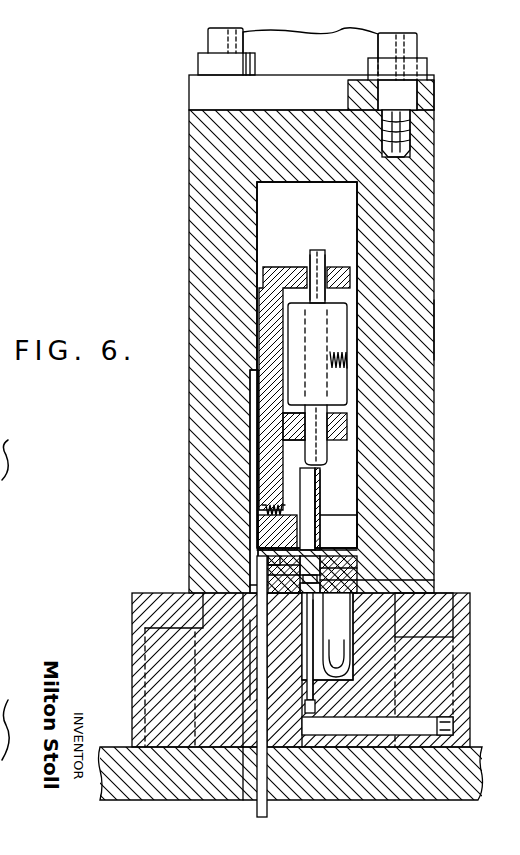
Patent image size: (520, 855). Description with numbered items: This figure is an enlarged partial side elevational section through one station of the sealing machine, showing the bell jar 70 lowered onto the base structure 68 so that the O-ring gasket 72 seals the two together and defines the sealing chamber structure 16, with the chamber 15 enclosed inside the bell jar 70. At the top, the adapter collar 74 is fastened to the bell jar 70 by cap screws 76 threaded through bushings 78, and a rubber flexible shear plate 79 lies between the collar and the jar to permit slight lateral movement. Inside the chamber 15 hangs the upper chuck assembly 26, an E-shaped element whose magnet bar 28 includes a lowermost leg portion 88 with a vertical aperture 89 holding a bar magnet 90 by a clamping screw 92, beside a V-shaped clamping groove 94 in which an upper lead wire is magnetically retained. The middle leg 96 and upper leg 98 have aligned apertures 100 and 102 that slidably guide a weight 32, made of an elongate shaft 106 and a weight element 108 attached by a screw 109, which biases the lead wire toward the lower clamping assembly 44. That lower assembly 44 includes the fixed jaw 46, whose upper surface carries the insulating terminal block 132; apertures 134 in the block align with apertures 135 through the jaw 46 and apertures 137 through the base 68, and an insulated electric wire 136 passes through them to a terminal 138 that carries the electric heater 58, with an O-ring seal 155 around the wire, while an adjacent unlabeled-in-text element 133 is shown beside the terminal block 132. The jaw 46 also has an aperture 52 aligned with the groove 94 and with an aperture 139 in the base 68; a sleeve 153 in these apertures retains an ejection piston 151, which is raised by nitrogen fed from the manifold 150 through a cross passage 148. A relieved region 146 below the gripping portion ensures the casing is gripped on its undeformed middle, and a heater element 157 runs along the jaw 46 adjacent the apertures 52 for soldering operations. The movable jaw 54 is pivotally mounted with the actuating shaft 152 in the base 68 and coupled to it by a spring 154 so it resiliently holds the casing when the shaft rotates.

The chamber 15 is at (283, 208).
The sealing chamber structure 16 is at (436, 166).
The upper chuck assembly 26 is at (293, 264).
The magnet bar 28 is at (357, 514).
The weight 32 is at (318, 249).
The lower clamping assembly 44 is at (308, 586).
The fixed jaw 46 is at (240, 625).
The aperture 52 is at (300, 606).
The movable jaw 54 is at (317, 578).
The electric heater 58 is at (318, 562).
The base structure 68 is at (471, 642).
The bell jar 70 is at (434, 334).
The O-ring gasket 72 is at (372, 592).
The adapter collar 74 is at (309, 61).
The cap screw 76 is at (207, 38).
The bushing 78 is at (197, 61).
The flexible shear plate 79 is at (411, 118).
The lowermost leg portion 88 is at (322, 484).
The aperture 89 is at (325, 519).
The bar magnet 90 is at (321, 507).
The clamping screw 92 is at (262, 510).
The clamping groove 94 is at (323, 530).
The middle leg 96 is at (343, 413).
The upper leg 98 is at (328, 265).
The aperture 100 is at (328, 446).
The aperture 102 is at (342, 280).
The elongate shaft 106 is at (326, 270).
The weight element 108 is at (323, 359).
The screw 109 is at (345, 352).
The insulating terminal block 132 is at (266, 573).
The seal 133 is at (266, 563).
The aperture 134 is at (252, 585).
The aperture 135 is at (248, 667).
The insulated electric wire 136 is at (268, 810).
The aperture 137 is at (256, 727).
The terminal 138 is at (264, 556).
The aperture 139 is at (340, 800).
The relieved region 146 is at (330, 582).
The cross passage 148 is at (398, 727).
The manifold 150 is at (453, 738).
The ejection piston 151 is at (317, 707).
The actuating shaft 152 is at (350, 655).
The sleeve 153 is at (340, 684).
The spring 154 is at (316, 682).
The O-ring seal 155 is at (266, 695).
The heater element 157 is at (345, 575).